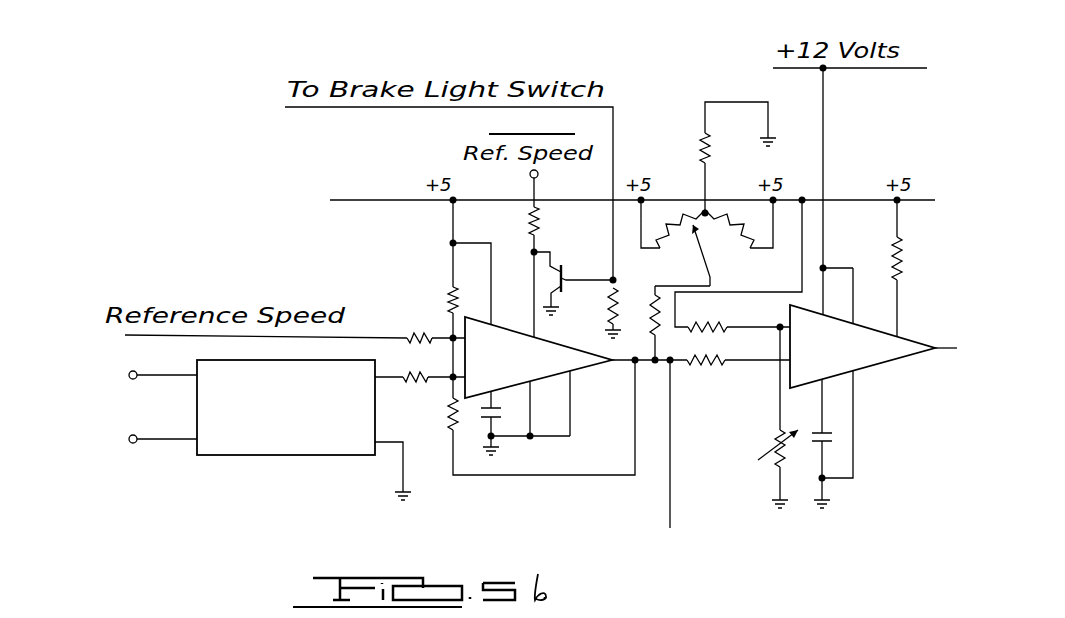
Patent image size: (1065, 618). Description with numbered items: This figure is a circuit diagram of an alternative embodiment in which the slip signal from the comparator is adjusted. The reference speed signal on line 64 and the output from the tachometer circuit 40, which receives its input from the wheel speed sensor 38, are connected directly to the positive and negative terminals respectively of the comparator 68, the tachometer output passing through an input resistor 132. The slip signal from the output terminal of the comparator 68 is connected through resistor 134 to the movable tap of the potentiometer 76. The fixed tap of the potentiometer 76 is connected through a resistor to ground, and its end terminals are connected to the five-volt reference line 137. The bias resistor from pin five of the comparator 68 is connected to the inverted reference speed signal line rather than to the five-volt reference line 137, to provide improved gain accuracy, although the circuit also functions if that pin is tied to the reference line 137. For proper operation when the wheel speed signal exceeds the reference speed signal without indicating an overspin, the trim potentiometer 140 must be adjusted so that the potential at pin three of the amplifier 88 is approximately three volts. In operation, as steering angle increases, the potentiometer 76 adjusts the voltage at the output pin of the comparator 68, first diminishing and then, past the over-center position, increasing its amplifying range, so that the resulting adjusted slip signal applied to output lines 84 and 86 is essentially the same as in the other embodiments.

The wheel speed sensor 38 is at (117, 416).
The tachometer circuit 40 is at (275, 455).
The reference speed signal line 64 is at (368, 333).
The tachometer input resistor 132 is at (417, 387).
The comparator 68 is at (590, 350).
The output line 86 is at (630, 380).
The resistor 134 is at (652, 318).
The potentiometer 76 is at (712, 242).
The output line 84 is at (670, 485).
The trim potentiometer 140 is at (772, 438).
The amplifier 88 is at (880, 367).
The 5-volt reference line 137 is at (858, 200).